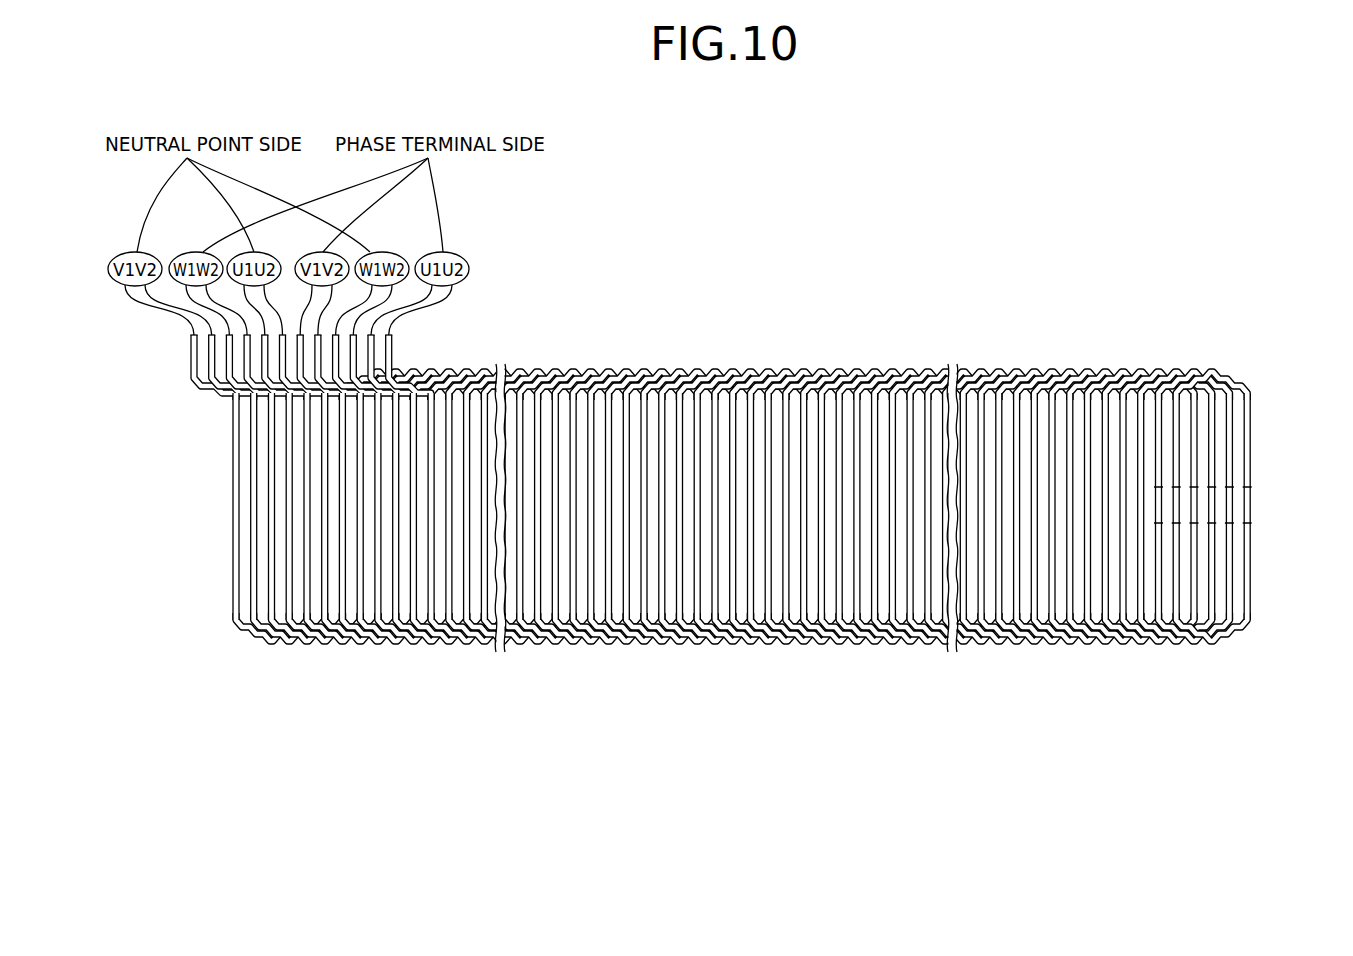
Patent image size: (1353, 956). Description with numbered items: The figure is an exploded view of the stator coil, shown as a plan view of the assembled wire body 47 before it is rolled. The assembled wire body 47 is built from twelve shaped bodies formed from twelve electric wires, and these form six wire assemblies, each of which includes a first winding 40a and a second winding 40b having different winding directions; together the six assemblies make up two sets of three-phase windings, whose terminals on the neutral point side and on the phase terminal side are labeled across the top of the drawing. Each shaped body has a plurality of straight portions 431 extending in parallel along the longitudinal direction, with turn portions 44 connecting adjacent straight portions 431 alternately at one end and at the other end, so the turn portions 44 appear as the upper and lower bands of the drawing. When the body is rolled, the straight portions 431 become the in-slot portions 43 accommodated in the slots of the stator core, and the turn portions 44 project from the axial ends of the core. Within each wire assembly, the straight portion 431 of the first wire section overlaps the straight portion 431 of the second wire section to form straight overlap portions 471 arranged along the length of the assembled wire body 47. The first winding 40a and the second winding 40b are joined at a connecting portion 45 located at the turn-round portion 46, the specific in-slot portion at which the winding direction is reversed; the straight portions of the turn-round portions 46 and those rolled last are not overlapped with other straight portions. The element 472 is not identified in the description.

The first winding 40a is at (190, 358).
The second winding 40b is at (297, 351).
The in-slot portion 43 is at (740, 519).
The straight portion 431 is at (233, 556).
The turn portion 44 is at (737, 510).
The connecting portion 45 is at (1258, 502).
The turn-round portion 46 is at (1262, 578).
The assembled wire body 47 is at (952, 356).
The straight overlap portion 471 is at (232, 607).
The second conductor 472 is at (247, 613).